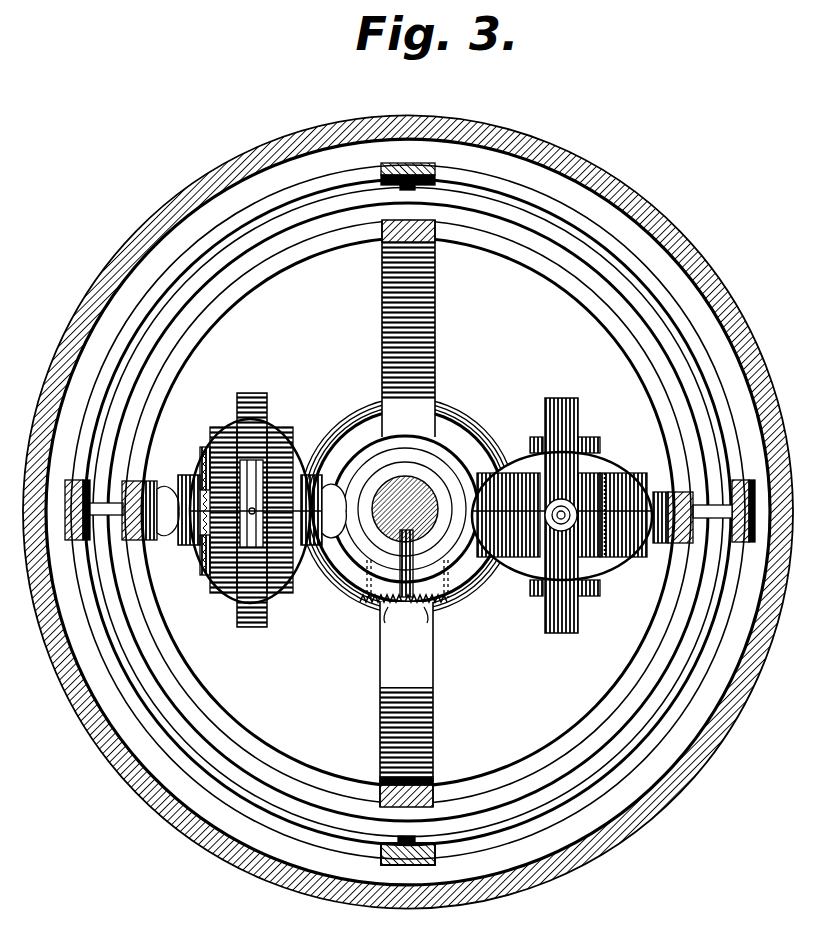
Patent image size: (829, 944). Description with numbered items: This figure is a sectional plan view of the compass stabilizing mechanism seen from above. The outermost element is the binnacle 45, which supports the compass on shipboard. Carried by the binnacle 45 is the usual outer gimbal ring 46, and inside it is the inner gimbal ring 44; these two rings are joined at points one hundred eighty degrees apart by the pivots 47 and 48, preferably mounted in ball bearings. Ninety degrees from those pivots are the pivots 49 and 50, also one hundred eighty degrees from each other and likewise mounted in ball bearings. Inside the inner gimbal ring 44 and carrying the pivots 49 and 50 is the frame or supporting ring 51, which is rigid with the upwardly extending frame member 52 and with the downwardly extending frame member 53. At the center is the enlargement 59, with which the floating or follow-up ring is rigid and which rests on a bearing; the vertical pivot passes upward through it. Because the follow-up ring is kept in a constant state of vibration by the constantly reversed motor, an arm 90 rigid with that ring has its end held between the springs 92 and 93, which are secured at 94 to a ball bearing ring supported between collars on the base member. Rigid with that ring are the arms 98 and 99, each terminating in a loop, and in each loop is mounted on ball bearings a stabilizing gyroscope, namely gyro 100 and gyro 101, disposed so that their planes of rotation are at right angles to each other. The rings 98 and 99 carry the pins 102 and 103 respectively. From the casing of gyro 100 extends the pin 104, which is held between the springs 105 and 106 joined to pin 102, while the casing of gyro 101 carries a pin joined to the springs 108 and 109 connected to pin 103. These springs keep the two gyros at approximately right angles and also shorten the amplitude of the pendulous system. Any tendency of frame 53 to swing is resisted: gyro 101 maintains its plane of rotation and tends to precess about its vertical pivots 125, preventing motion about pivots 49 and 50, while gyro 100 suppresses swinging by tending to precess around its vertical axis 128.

The inner gimbal ring 44 is at (655, 330).
The binnacle 45 is at (572, 152).
The outer gimbal ring 46 is at (664, 291).
The pivot 47 is at (437, 183).
The pivot 48 is at (380, 852).
The pivot 49 is at (695, 490).
The pivot 50 is at (113, 503).
The frame or supporting ring 51 is at (250, 290).
The upwardly extending frame member 52 is at (396, 240).
The downwardly extending frame member 53 is at (436, 352).
The enlargement 59 is at (416, 502).
The arm 90 is at (402, 612).
The spring 92 is at (378, 618).
The spring 93 is at (430, 620).
The securing point 94 is at (345, 600).
The arm 98 is at (262, 406).
The arm 99 is at (560, 400).
The stabilizing gyroscope 100 is at (300, 440).
The stabilizing gyroscope 101 is at (520, 472).
The pin 102 is at (242, 432).
The pin 103 is at (590, 448).
The pin 104 is at (225, 508).
The spring 105 is at (207, 450).
The spring 106 is at (210, 537).
The spring 108 is at (600, 496).
The spring 109 is at (607, 562).
The vertical pivots 125 is at (553, 636).
The vertical axis 128 is at (322, 466).